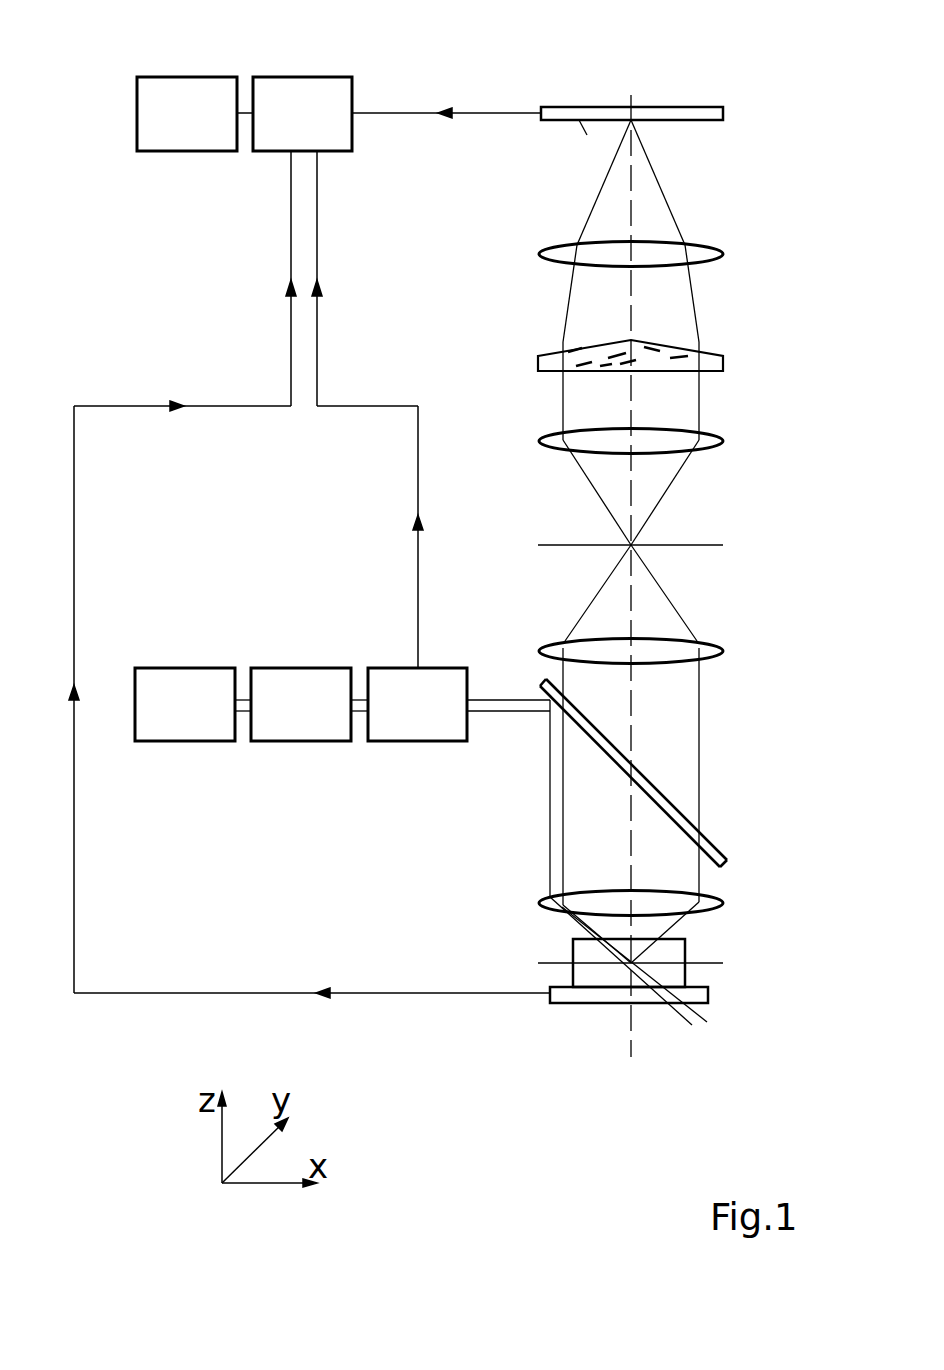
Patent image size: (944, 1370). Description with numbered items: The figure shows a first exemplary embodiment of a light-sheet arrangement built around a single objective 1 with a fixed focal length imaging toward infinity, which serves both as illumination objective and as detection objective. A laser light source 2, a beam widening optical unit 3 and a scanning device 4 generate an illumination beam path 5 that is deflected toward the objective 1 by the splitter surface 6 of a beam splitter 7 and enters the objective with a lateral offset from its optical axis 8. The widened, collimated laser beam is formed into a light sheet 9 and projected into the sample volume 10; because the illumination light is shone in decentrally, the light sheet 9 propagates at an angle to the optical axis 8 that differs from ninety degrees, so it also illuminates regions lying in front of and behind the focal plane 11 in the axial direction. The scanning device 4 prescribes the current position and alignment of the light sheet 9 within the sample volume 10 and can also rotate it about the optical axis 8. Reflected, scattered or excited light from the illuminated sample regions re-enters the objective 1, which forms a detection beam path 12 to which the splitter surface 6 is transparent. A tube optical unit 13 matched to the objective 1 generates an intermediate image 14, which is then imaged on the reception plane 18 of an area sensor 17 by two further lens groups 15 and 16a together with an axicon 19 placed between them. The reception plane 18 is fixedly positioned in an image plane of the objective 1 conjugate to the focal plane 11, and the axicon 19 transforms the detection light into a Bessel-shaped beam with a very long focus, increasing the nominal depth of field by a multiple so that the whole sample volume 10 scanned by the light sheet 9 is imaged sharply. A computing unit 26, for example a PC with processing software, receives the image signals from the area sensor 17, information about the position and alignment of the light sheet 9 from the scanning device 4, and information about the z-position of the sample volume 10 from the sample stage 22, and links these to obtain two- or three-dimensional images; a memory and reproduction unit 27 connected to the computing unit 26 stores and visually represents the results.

The objective 1 is at (713, 903).
The laser light source 2 is at (190, 680).
The beam widening optical unit 3 is at (307, 680).
The scanning device 4 is at (420, 728).
The illumination beam path 5 is at (542, 772).
The splitter surface 6 is at (610, 762).
The beam splitter 7 is at (660, 793).
The optical axis 8 is at (633, 1030).
The light sheet 9 is at (610, 948).
The sample volume 10 is at (670, 955).
The focal plane 11 is at (713, 965).
The detection beam path 12 is at (677, 710).
The tube optical unit 13 is at (707, 642).
The intermediate image 14 is at (568, 545).
The lens group 15 is at (700, 442).
The lens group 16a is at (702, 255).
The area sensor 17 is at (667, 110).
The reception plane 18 is at (578, 122).
The axicon 19 is at (553, 360).
The sample stage 22 is at (600, 999).
The computing unit 26 is at (297, 90).
The memory and reproduction unit 27 is at (184, 90).